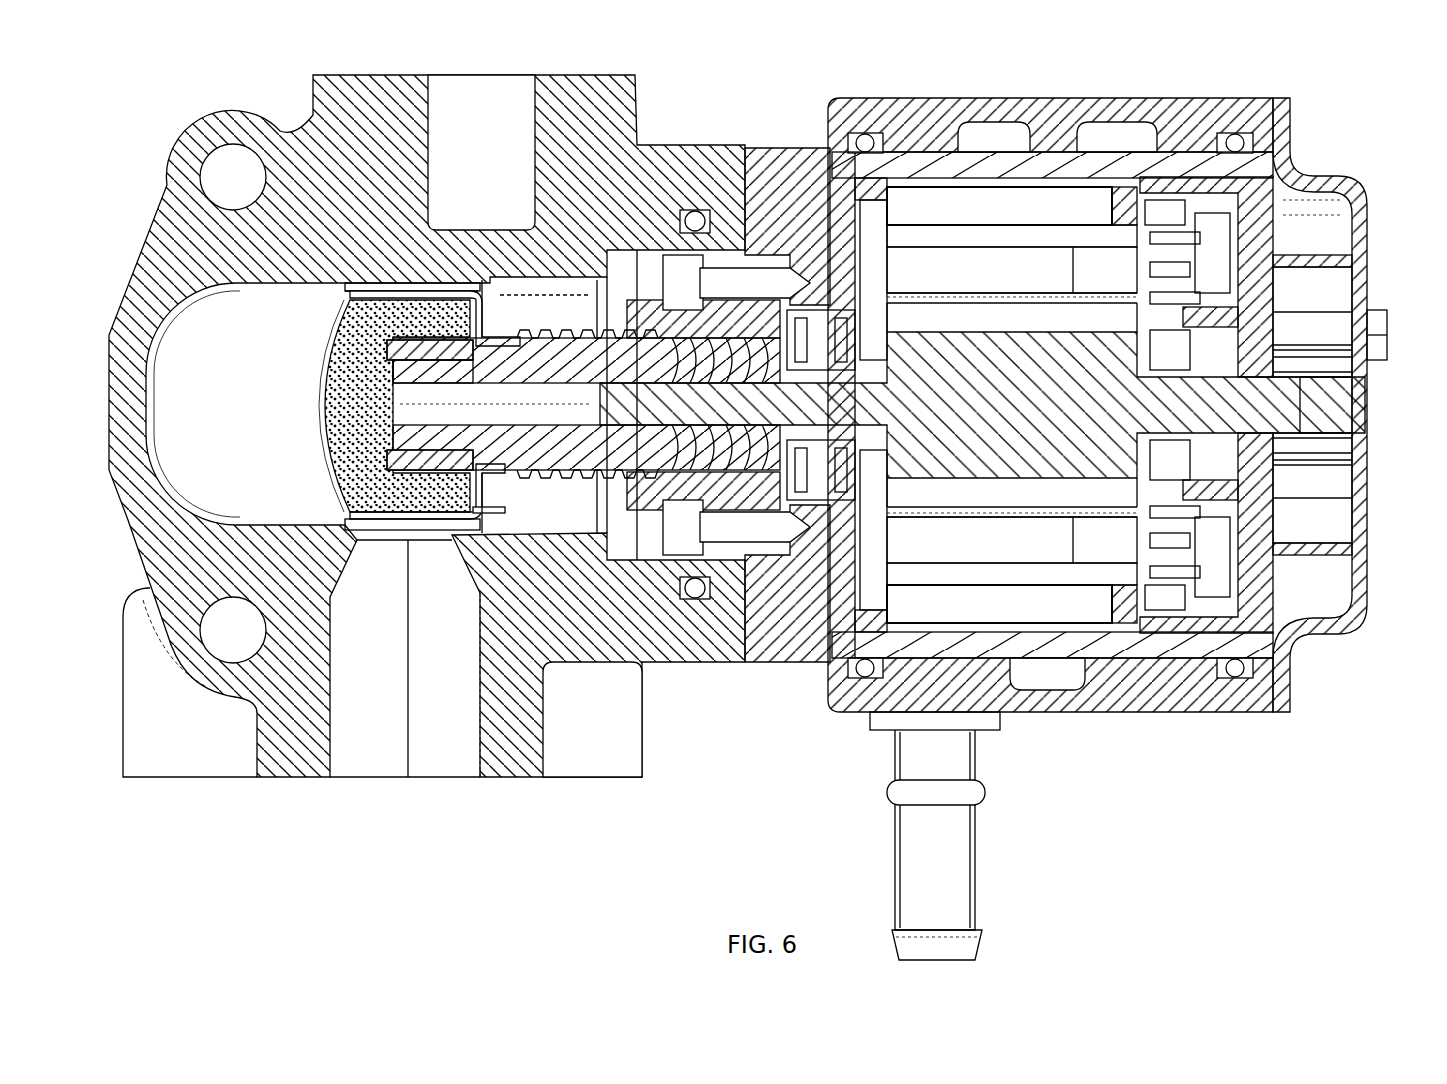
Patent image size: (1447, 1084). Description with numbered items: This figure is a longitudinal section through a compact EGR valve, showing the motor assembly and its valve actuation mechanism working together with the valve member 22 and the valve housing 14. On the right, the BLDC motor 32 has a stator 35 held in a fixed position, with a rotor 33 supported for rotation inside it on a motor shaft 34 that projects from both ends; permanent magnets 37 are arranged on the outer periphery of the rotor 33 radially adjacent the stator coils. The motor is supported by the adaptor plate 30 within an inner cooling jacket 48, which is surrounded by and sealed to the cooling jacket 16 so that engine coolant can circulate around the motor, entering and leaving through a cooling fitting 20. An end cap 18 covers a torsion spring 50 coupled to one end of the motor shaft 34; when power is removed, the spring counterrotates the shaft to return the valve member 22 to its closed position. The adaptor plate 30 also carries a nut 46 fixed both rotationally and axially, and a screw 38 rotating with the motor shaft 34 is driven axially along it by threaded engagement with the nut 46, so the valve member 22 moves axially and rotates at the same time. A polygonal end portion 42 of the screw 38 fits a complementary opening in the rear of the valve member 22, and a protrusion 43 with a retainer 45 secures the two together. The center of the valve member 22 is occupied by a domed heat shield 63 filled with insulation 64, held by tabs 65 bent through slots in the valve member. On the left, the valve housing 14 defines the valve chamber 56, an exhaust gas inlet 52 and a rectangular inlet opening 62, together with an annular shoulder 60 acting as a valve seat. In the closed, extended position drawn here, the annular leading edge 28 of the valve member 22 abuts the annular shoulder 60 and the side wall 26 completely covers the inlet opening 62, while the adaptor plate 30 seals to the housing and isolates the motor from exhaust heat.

The valve housing 14 is at (282, 100).
The cooling jacket 16 is at (940, 105).
The end cap 18 is at (1338, 627).
The cooling fitting 20 is at (950, 842).
The valve member 22 is at (375, 278).
The side wall 26 is at (425, 298).
The annular leading edge 28 is at (343, 287).
The adaptor plate 30 is at (790, 160).
The BLDC motor 32 is at (1107, 548).
The rotor 33 is at (1003, 422).
The motor shaft 34 is at (720, 340).
The stator 35 is at (1070, 275).
The permanent magnets 37 is at (985, 490).
The screw 38 is at (612, 355).
The end portion 42 is at (498, 300).
The protrusion 43 is at (490, 345).
The retainer 45 is at (432, 345).
The nut 46 is at (715, 490).
The inner cooling jacket 48 is at (1065, 165).
The torsion spring 50 is at (1325, 325).
The exhaust gas inlet 52 is at (440, 770).
The valve chamber 56 is at (222, 427).
The annular shoulder 60 is at (355, 521).
The inlet opening 62 is at (408, 782).
The heat shield 63 is at (325, 340).
The insulation 64 is at (345, 462).
The tabs 65 is at (493, 514).